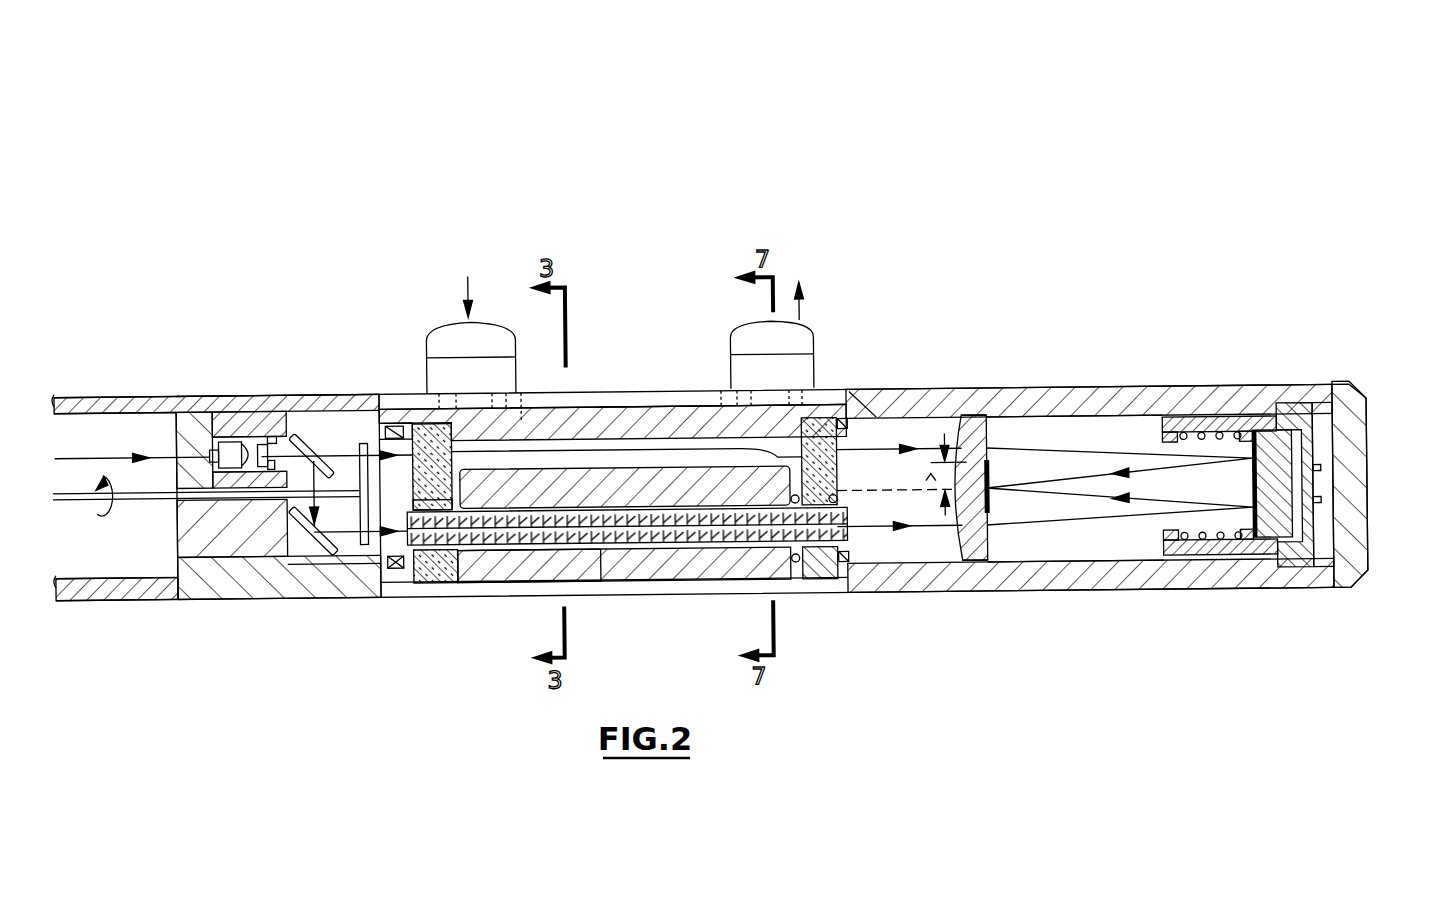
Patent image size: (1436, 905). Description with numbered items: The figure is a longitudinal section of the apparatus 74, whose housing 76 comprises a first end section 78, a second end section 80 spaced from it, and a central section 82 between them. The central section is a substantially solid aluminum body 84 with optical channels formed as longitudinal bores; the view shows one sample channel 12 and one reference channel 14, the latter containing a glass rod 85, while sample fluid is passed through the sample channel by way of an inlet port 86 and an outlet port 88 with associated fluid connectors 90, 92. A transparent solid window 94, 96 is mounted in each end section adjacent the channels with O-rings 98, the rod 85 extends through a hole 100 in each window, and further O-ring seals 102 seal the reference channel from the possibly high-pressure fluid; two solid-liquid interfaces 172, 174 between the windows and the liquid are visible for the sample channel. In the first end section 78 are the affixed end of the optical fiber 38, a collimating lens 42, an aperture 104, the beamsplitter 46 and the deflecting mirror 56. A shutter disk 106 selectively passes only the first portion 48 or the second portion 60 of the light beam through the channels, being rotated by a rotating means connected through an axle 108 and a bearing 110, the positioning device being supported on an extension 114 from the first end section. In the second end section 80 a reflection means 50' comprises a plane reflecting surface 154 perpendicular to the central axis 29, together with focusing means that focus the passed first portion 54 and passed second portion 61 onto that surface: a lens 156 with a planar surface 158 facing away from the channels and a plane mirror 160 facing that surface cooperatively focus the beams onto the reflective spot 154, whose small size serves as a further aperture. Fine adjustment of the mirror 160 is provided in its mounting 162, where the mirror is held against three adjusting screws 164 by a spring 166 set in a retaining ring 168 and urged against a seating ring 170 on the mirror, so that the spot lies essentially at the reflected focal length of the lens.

The sample channel 12 is at (604, 439).
The reference channel 14 is at (615, 550).
The central axis 29 is at (928, 502).
The optical fiber 38 is at (110, 449).
The collimating lens 42 is at (243, 432).
The beamsplitter 46 is at (300, 443).
The first portion of the light beam 48 is at (364, 544).
The reflection means 50' is at (1074, 449).
The passed first portion 54 is at (880, 451).
The deflecting mirror 56 is at (307, 551).
The second portion of the light beam 60 is at (378, 440).
The passed second portion 61 is at (946, 568).
The apparatus 74 is at (512, 185).
The housing 76 is at (636, 196).
The first end section 78 is at (318, 344).
The second end section 80 is at (1042, 359).
The central section 82 is at (672, 349).
The solid body 84 is at (513, 572).
The glass rod 85 is at (700, 541).
The inlet port 86 is at (477, 402).
The outlet port 88 is at (780, 404).
The fluid connector 90 is at (427, 352).
The fluid connector 92 is at (817, 347).
The transparent solid window 94 is at (415, 468).
The transparent solid window 96 is at (838, 476).
The O-ring 98 is at (417, 571).
The hole 100 is at (415, 495).
The O-ring seal 102 is at (457, 571).
The aperture 104 is at (271, 430).
The shutter disk 106 is at (360, 550).
The axle 108 is at (80, 497).
The bearing 110 is at (175, 506).
The extension 114 is at (90, 387).
The plane reflecting surface 154 is at (990, 483).
The lens 156 is at (990, 440).
The planar surface 158 is at (990, 546).
The plane mirror 160 is at (1252, 491).
The mounting 162 is at (1332, 397).
The adjusting screws 164 is at (1322, 506).
The spring 166 is at (1232, 424).
The retaining ring 168 is at (1182, 563).
The seating ring 170 is at (1243, 554).
The solid-liquid interface 172 is at (523, 448).
The solid-liquid interface 174 is at (722, 440).